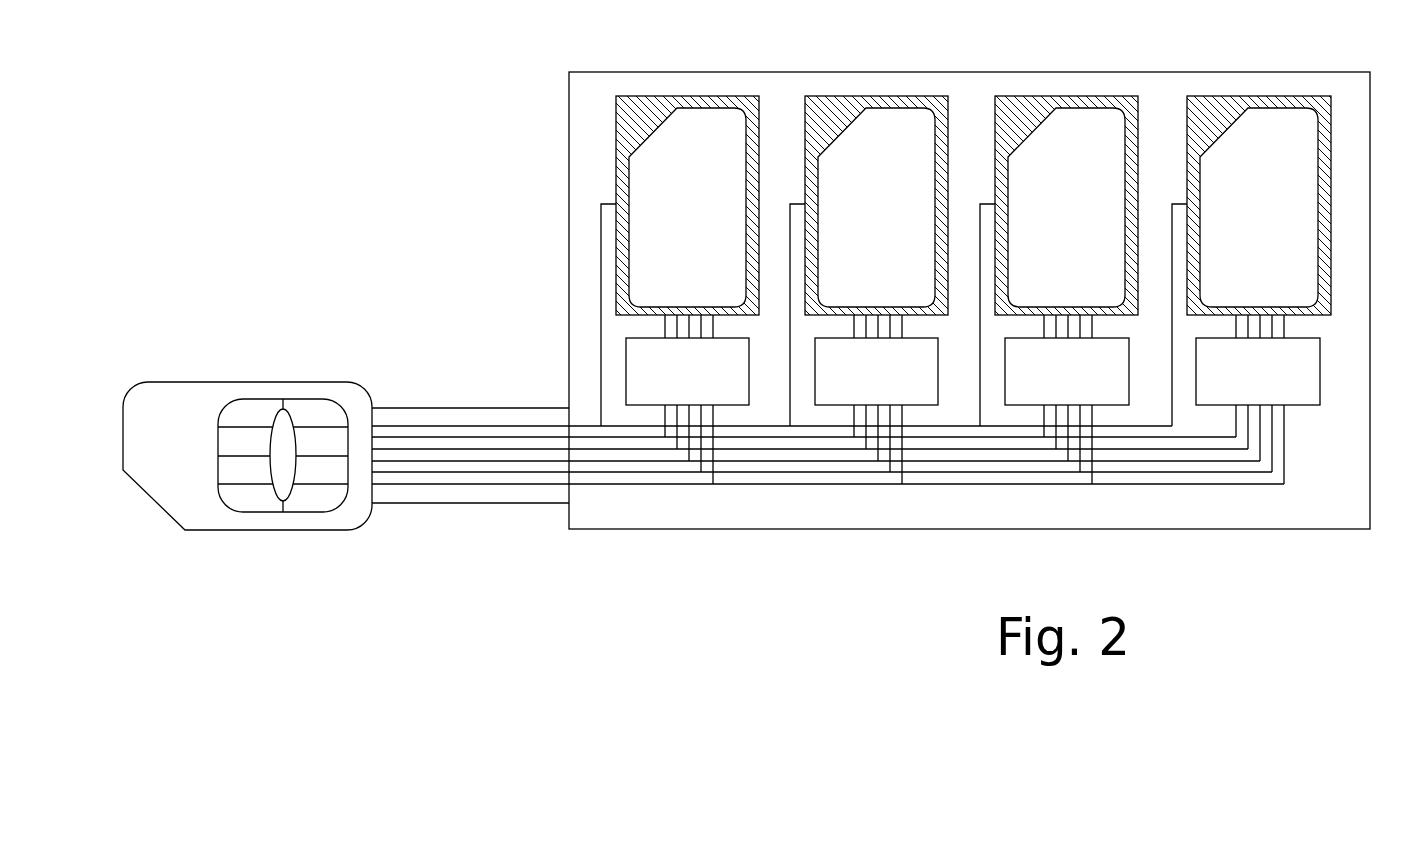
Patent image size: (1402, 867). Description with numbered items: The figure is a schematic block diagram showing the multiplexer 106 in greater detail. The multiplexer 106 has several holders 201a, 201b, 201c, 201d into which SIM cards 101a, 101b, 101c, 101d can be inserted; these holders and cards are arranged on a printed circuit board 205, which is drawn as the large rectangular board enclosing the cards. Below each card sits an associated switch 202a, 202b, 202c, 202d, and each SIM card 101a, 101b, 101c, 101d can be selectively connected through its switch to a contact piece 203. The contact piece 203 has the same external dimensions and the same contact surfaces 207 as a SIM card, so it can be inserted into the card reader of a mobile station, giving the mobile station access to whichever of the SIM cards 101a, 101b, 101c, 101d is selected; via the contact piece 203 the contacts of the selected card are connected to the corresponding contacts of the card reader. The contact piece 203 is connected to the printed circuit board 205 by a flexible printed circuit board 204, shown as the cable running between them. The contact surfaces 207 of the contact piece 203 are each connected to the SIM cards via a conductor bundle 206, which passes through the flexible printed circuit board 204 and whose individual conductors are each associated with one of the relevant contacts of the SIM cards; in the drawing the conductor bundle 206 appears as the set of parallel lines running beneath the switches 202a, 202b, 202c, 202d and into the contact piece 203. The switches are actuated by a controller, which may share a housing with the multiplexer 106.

The multiplexer 106 is at (387, 193).
The SIM card 101a is at (1225, 219).
The SIM card 101b is at (1032, 219).
The SIM card 101c is at (910, 219).
The SIM card 101d is at (653, 219).
The holder 201a is at (1287, 96).
The holder 201b is at (1060, 96).
The holder 201c is at (865, 97).
The holder 201d is at (657, 96).
The switch 202a is at (1225, 383).
The switch 202b is at (1034, 383).
The switch 202c is at (909, 383).
The switch 202d is at (654, 383).
The contact piece 203 is at (170, 382).
The flexible printed circuit board 204 is at (528, 503).
The printed circuit board 205 is at (569, 108).
The conductor bundle 206 is at (623, 493).
The contact surfaces 207 is at (318, 408).